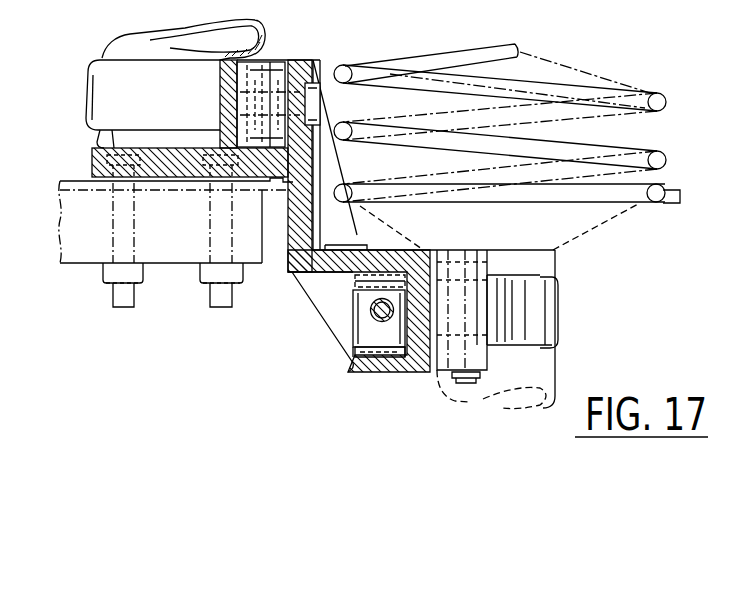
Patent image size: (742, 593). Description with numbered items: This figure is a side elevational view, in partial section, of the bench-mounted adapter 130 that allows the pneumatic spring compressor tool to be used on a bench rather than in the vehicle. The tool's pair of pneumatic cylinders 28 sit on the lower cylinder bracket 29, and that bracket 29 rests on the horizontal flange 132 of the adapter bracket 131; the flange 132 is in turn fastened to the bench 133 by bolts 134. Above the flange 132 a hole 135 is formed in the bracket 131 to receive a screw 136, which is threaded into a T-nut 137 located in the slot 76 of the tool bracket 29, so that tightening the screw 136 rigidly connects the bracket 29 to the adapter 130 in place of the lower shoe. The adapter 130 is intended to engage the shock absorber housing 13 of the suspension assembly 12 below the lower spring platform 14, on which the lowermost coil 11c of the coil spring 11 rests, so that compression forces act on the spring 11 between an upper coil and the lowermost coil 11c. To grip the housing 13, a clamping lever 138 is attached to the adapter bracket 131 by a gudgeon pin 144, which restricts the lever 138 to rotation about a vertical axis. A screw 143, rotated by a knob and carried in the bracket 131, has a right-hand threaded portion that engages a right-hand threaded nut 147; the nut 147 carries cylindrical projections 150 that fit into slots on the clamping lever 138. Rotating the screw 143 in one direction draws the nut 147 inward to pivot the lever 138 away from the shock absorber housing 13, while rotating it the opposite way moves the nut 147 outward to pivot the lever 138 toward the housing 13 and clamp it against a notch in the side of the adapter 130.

The coil spring 11 is at (416, 55).
The lowermost spring coil 11c is at (665, 188).
The suspension assembly 12 is at (578, 240).
The shock absorber housing 13 is at (560, 352).
The lower spring platform 14 is at (676, 200).
The pneumatic cylinders 28 is at (146, 34).
The lower cylinder bracket 29 is at (88, 95).
The slot 76 is at (281, 67).
The bench-mounted adapter 130 is at (312, 304).
The bracket 131 is at (290, 272).
The horizontal flange 132 is at (92, 160).
The bench 133 is at (90, 265).
The bolts 134 is at (209, 297).
The hole 135 is at (315, 95).
The screw 136 is at (310, 80).
The T-nut 137 is at (262, 75).
The clamping lever 138 is at (556, 322).
The screw 143 is at (370, 308).
The gudgeon pin 144 is at (464, 384).
The right-hand threaded nut 147 is at (352, 330).
The cylindrical projections 150 is at (388, 278).